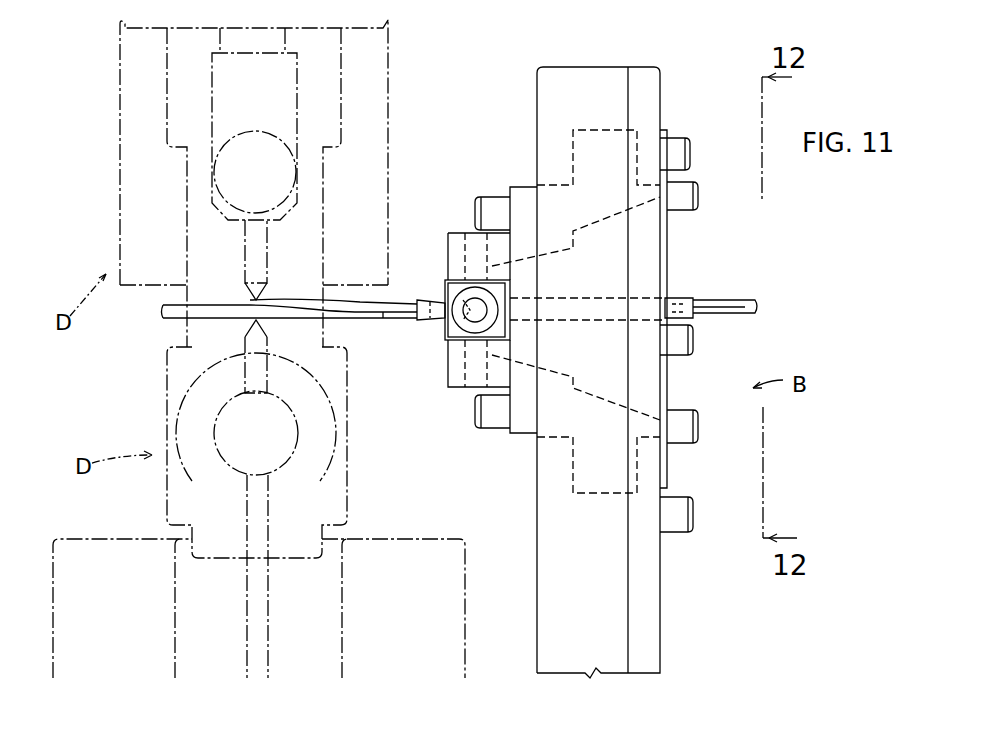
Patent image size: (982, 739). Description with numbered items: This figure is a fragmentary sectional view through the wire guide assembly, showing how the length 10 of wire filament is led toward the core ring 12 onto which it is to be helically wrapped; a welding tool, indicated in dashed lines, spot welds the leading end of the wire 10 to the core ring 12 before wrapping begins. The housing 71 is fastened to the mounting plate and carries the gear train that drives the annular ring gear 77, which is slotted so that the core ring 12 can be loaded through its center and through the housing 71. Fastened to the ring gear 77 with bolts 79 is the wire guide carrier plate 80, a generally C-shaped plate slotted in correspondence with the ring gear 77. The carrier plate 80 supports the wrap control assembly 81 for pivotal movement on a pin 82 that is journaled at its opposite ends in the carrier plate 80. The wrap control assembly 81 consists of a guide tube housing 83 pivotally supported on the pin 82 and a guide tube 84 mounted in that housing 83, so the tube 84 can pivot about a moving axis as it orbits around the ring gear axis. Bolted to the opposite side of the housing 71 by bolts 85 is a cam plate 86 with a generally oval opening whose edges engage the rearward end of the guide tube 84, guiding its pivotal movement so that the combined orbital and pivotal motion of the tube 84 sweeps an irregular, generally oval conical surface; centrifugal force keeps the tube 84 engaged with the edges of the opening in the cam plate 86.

The length of wire filament 10 is at (360, 313).
The core ring 12 is at (384, 322).
The housing 71 is at (658, 100).
The annular ring gear 77 is at (597, 497).
The bolts 79 is at (496, 204).
The wire guide carrier plate 80 is at (527, 437).
The wrap control assembly 81 is at (505, 290).
The pin 82 is at (463, 372).
The guide tube housing 83 is at (448, 332).
The guide tube 84 is at (437, 300).
The bolts 85 is at (690, 155).
The cam plate 86 is at (667, 237).